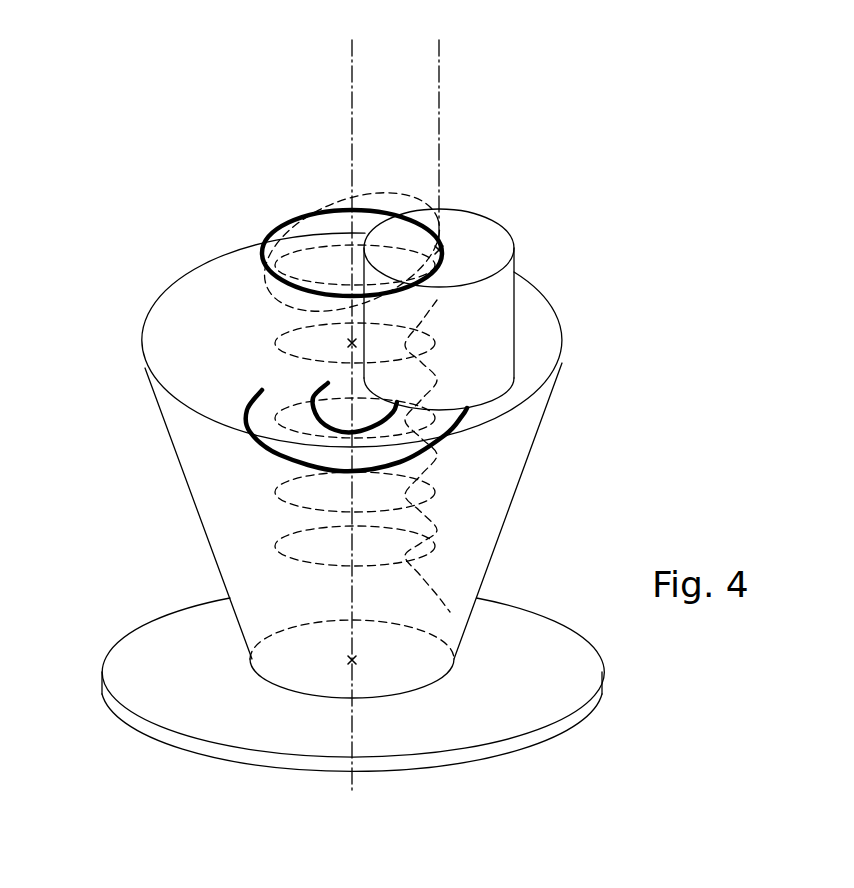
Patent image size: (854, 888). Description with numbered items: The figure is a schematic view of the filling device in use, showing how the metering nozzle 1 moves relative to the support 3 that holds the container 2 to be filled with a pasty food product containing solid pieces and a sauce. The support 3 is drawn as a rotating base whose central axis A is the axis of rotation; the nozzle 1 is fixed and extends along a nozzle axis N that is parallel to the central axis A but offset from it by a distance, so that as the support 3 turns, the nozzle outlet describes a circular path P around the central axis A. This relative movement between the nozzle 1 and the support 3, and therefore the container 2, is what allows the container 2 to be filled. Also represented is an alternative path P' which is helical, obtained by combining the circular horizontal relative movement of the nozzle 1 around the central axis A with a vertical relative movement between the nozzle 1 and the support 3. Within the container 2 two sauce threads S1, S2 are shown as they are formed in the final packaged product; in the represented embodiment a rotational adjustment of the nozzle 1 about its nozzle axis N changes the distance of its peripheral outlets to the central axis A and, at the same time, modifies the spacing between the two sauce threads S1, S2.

The metering nozzle 1 is at (492, 308).
The container 2 is at (540, 430).
The support 3 is at (123, 663).
The central axis A is at (353, 399).
The nozzle axis N is at (440, 131).
The path P is at (350, 220).
The alternative path P' is at (352, 222).
The sauce thread S1 is at (307, 402).
The sauce thread S2 is at (247, 422).